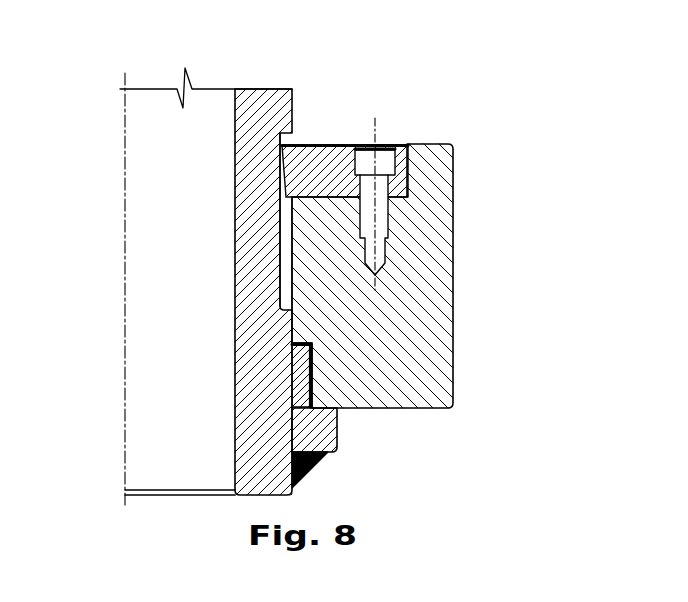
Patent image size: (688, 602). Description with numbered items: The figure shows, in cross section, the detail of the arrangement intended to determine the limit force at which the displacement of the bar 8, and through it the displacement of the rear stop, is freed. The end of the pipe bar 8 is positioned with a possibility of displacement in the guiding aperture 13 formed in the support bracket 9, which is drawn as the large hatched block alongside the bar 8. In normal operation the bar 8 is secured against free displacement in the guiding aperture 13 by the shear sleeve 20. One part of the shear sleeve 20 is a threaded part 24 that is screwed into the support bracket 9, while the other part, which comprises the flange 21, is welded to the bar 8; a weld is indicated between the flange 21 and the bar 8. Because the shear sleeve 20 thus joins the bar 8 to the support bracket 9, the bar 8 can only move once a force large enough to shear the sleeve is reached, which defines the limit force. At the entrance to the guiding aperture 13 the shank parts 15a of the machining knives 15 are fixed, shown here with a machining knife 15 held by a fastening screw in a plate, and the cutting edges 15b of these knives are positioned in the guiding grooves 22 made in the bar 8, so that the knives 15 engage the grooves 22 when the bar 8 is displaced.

The bar 8 is at (292, 90).
The support bracket 9 is at (425, 263).
The guiding aperture 13 is at (290, 249).
The machining knife 15 is at (465, 155).
The shank part 15a is at (398, 163).
The cutting edge 15b is at (320, 145).
The shear sleeve 20 is at (277, 392).
The flange 21 is at (312, 430).
The guiding groove 22 is at (285, 272).
The threaded part 24 is at (298, 371).